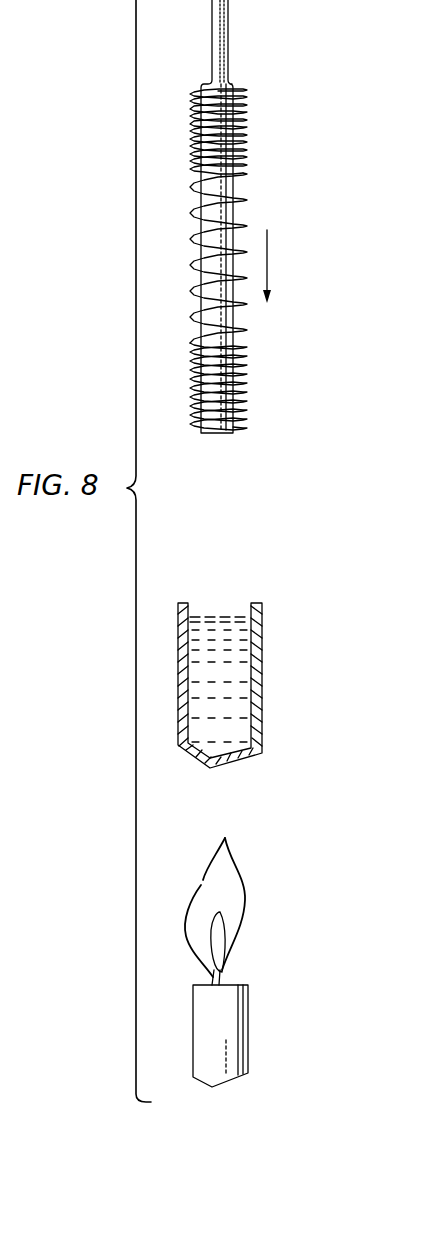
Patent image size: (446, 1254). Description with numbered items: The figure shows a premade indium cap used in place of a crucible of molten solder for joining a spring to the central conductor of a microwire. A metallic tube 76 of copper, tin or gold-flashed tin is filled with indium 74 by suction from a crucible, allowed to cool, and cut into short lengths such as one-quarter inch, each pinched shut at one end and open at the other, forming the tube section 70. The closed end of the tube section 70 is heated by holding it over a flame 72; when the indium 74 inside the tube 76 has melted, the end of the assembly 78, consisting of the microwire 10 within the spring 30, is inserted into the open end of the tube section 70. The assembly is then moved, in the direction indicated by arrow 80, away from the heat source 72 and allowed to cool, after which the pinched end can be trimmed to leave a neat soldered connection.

The microwire 10 is at (242, 81).
The spring 30 is at (248, 202).
The assembly 78 is at (283, 340).
The direction of movement 80 is at (268, 252).
The tube section 70 is at (271, 641).
The indium 74 is at (238, 652).
The tube 76 is at (260, 721).
The flame 72 is at (265, 903).